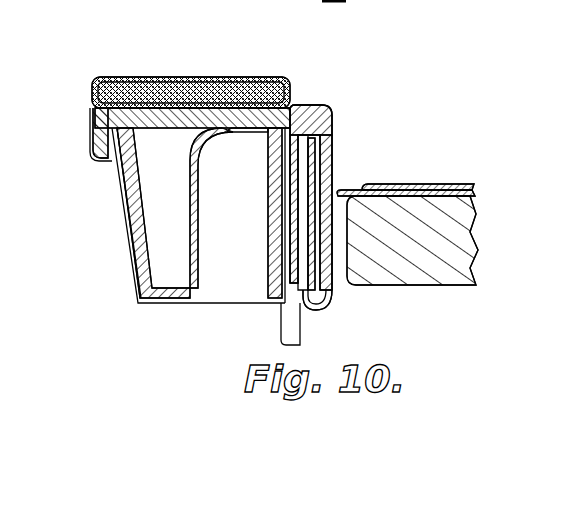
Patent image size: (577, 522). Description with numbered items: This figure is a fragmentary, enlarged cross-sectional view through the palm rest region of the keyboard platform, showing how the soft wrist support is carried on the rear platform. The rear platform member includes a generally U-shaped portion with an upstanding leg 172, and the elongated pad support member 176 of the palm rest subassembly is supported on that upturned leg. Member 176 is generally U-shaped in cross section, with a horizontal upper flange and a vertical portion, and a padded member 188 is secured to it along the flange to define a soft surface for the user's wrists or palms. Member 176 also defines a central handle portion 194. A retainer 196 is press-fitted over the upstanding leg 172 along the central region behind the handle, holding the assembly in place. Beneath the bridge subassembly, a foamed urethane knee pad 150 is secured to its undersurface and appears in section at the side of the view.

The knee pad 150 is at (438, 245).
The upstanding leg 172 is at (313, 187).
The pad support member 176 is at (102, 199).
The padded member 188 is at (182, 77).
The central handle portion 194 is at (148, 230).
The retainer 196 is at (333, 129).